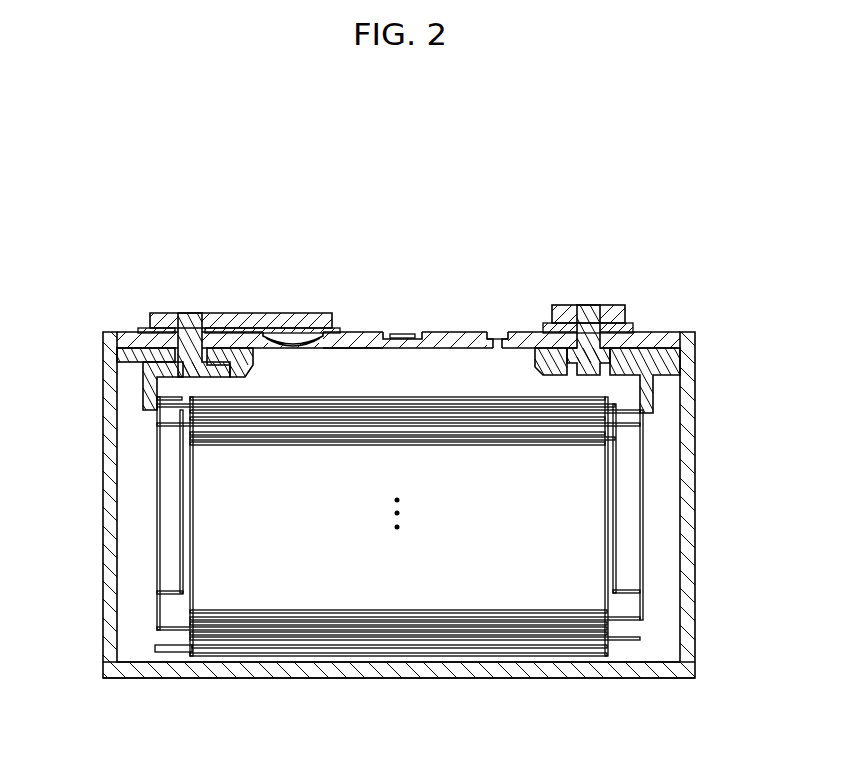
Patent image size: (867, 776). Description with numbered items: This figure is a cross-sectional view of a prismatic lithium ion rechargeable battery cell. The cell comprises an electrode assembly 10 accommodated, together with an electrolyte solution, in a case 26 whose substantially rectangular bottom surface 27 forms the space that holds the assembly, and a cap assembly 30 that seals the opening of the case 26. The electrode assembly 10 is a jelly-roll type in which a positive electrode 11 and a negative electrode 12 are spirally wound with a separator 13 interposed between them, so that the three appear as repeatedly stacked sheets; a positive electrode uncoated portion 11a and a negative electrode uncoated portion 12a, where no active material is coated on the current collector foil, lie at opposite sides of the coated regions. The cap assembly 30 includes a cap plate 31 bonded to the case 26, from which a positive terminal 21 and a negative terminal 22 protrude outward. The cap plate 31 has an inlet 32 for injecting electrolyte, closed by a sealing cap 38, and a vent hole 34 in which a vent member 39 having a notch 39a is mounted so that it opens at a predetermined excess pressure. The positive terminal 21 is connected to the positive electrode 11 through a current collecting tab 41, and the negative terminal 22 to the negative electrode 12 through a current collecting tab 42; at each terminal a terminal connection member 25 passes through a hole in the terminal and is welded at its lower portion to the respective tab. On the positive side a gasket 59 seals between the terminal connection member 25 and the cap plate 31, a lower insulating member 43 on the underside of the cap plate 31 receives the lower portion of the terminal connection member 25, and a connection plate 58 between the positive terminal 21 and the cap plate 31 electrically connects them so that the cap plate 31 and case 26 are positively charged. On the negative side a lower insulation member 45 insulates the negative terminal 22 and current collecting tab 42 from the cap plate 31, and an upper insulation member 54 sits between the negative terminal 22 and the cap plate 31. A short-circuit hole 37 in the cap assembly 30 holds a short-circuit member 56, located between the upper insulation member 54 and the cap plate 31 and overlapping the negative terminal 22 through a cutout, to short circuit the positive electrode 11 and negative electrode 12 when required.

The electrode assembly 10 is at (467, 673).
The positive electrode 11 is at (416, 561).
The positive electrode uncoated portion 11a is at (623, 640).
The negative electrode 12 is at (397, 566).
The negative electrode uncoated portion 12a is at (167, 652).
The separator 13 is at (400, 656).
The positive terminal 21 is at (612, 305).
The negative terminal 22 is at (165, 312).
The terminal connection member 25 is at (190, 312).
The case 26 is at (421, 540).
The bottom surface 27 is at (328, 670).
The cap assembly 30 is at (409, 357).
The cap plate 31 is at (675, 333).
The inlet 32 is at (500, 298).
The vent hole 34 is at (385, 356).
The short-circuit hole 37 is at (278, 322).
The sealing cap 38 is at (498, 332).
The vent member 39 is at (410, 309).
The notch 39a is at (401, 333).
The current collecting tab 41 is at (450, 570).
The current collecting tab 42 is at (160, 468).
The lower insulating member 43 is at (668, 362).
The lower insulation member 45 is at (127, 357).
The upper insulation member 54 is at (237, 326).
The short-circuit member 56 is at (297, 328).
The connection plate 58 is at (633, 325).
The gasket 59 is at (541, 350).